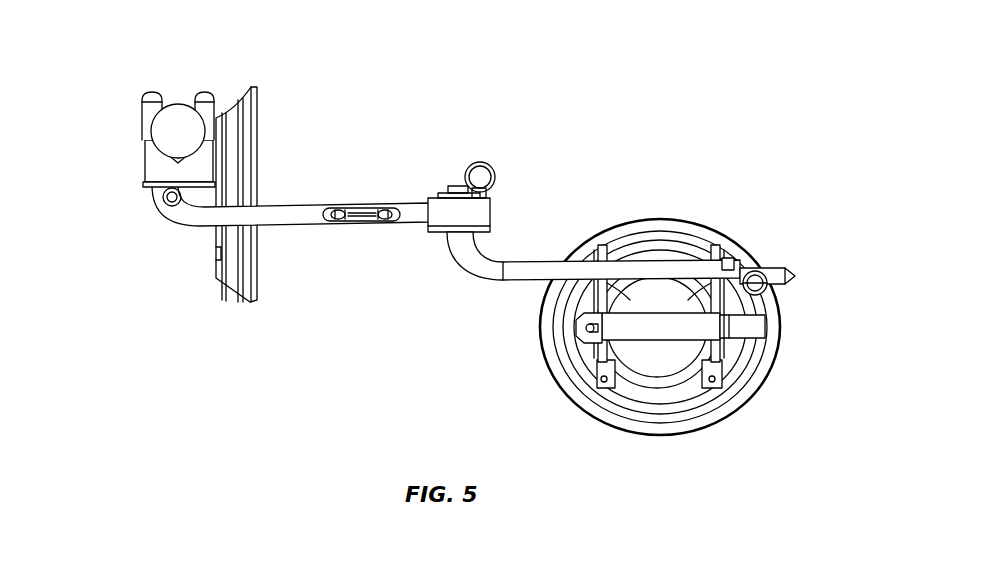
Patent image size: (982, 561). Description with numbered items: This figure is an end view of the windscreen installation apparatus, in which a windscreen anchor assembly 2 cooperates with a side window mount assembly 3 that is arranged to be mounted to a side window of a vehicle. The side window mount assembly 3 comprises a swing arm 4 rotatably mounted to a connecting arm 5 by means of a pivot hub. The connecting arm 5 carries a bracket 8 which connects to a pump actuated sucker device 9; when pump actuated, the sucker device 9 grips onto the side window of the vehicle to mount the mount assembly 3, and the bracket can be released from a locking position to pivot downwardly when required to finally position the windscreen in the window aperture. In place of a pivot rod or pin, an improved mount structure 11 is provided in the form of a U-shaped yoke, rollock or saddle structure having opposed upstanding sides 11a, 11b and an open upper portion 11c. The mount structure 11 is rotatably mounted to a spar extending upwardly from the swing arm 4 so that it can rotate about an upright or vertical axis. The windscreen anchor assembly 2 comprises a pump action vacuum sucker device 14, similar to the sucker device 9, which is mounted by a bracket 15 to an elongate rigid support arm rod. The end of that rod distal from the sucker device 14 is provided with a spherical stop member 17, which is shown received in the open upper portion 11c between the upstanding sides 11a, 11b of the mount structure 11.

The windscreen anchor assembly 2 is at (475, 215).
The side window mount assembly 3 is at (534, 375).
The swing arm 4 is at (298, 207).
The connecting arm 5 is at (533, 268).
The bracket 8 is at (730, 252).
The pump actuated sucker device 9 is at (652, 222).
The mount structure 11 is at (163, 168).
The upstanding side 11a is at (150, 92).
The upstanding side 11b is at (203, 92).
The open upper portion 11c is at (180, 100).
The pump action vacuum sucker device 14 is at (257, 132).
The bracket 15 is at (185, 213).
The spherical stop member 17 is at (178, 135).